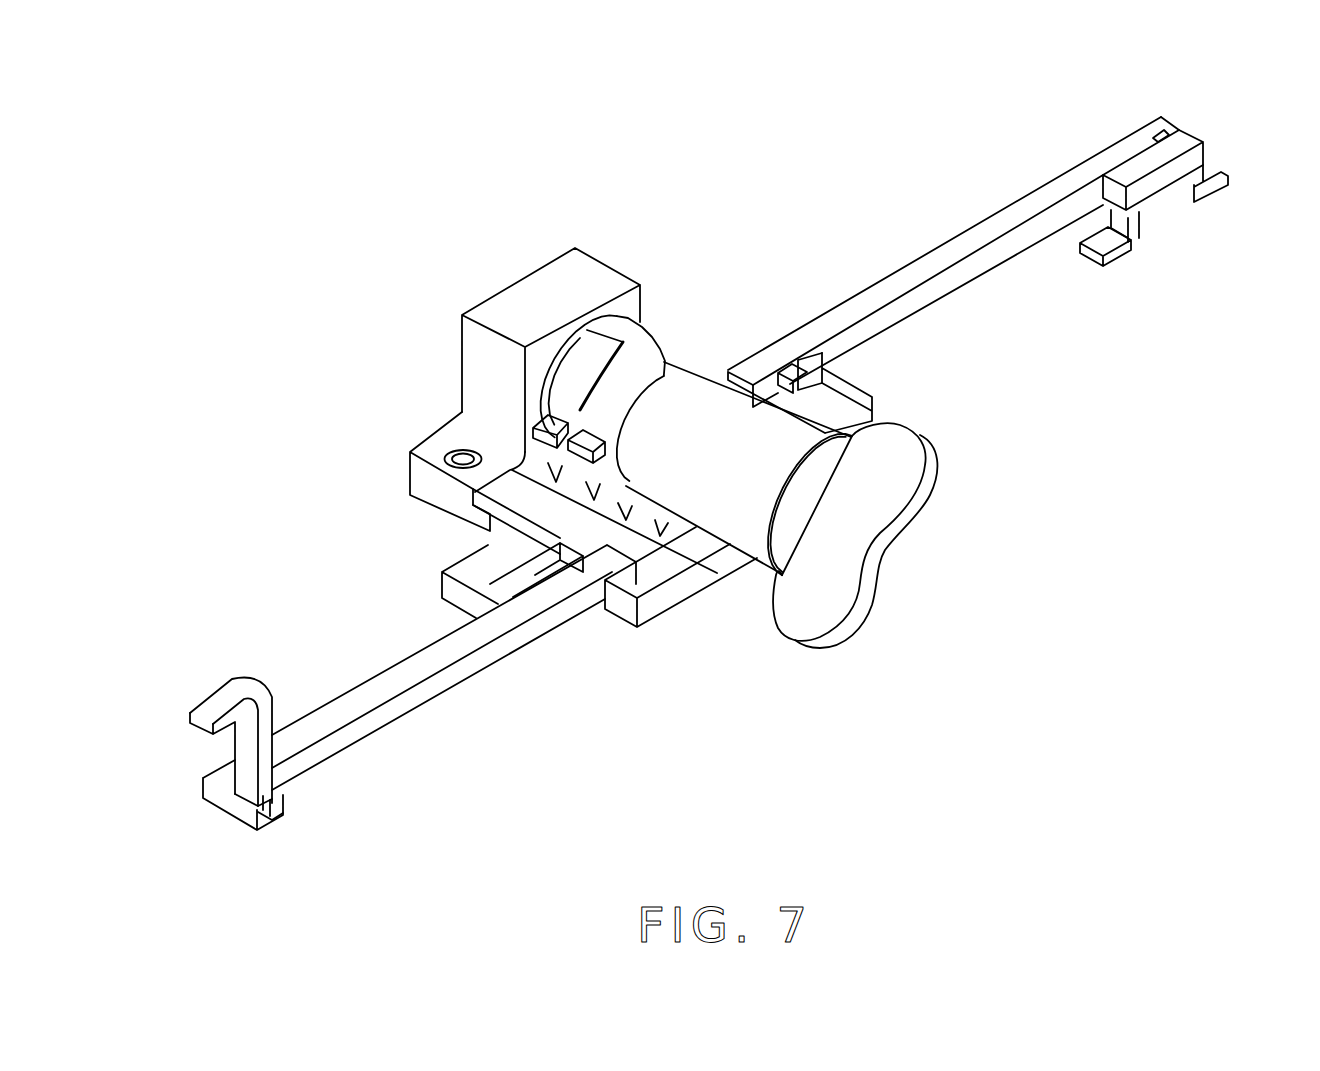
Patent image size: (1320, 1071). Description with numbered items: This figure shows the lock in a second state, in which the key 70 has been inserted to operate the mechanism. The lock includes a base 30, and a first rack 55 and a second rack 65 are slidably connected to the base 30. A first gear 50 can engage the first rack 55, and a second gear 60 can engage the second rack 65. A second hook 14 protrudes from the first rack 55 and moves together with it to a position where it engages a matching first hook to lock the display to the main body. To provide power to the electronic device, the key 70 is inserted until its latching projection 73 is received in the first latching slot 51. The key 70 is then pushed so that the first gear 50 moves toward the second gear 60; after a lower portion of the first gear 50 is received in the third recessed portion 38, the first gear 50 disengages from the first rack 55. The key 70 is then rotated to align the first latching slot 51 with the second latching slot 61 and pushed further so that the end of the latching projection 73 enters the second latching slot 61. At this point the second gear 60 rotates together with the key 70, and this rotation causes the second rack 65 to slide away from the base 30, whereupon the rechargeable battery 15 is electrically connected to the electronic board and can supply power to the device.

The second hook 14 is at (246, 752).
The rechargeable battery 15 is at (1181, 146).
The base 30 is at (482, 345).
The third recessed portion 38 is at (658, 500).
The first gear 50 is at (598, 402).
The first latching slot 51 is at (655, 352).
The first rack 55 is at (405, 678).
The second gear 60 is at (567, 355).
The second latching slot 61 is at (598, 332).
The second rack 65 is at (1037, 205).
The key 70 is at (778, 440).
The latching projection 73 is at (628, 332).